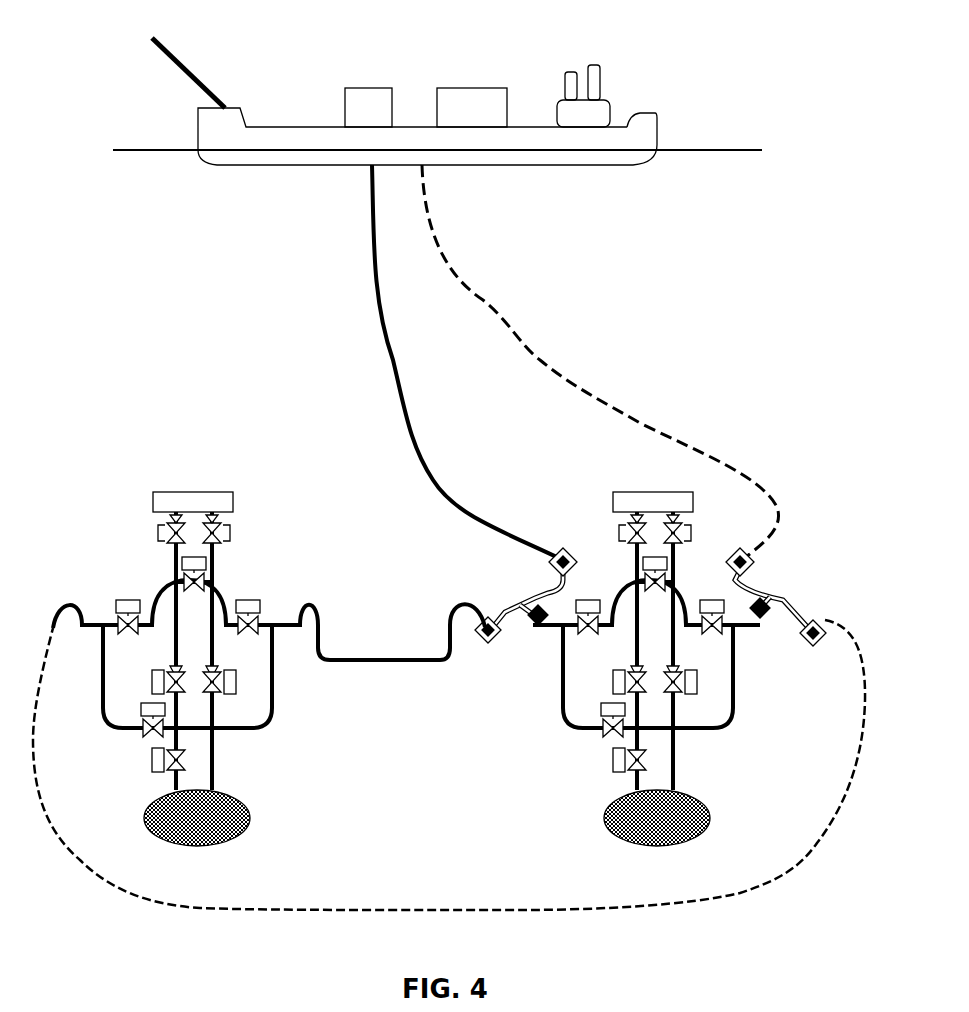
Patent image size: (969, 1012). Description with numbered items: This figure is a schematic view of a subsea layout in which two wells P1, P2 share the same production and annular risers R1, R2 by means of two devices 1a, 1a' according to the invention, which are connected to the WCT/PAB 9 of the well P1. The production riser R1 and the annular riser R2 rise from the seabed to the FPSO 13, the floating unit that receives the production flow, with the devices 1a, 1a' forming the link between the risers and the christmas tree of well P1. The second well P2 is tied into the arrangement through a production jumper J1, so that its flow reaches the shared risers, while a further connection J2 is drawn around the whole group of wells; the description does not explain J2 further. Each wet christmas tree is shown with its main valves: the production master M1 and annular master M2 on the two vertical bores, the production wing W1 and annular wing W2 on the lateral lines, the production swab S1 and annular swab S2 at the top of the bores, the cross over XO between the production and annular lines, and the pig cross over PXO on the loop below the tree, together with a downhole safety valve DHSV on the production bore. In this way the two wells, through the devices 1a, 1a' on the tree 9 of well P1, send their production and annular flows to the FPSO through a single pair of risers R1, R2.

The FPSO 13 is at (432, 127).
The element FPSO is at (579, 109).
The production riser R1 is at (383, 357).
The annular riser R2 is at (538, 362).
The device 1a is at (499, 590).
The device 1a' is at (791, 601).
The production jumper J1 is at (403, 655).
The second jumper/flowline loop J2 is at (447, 908).
The WCT/PAB 9 is at (250, 728).
The production well P1 is at (627, 825).
The production well P2 is at (222, 823).
The production swab valve S1 is at (424, 530).
The annular swab valve S2 is at (417, 530).
The production wing valve W1 is at (418, 625).
The annular wing valve W2 is at (420, 625).
The production master valve M1 is at (424, 682).
The annular master valve M2 is at (420, 683).
The cross over valve XO is at (424, 582).
The pig cross over valve PXO is at (352, 720).
The downhole safety valve DHSV is at (375, 760).